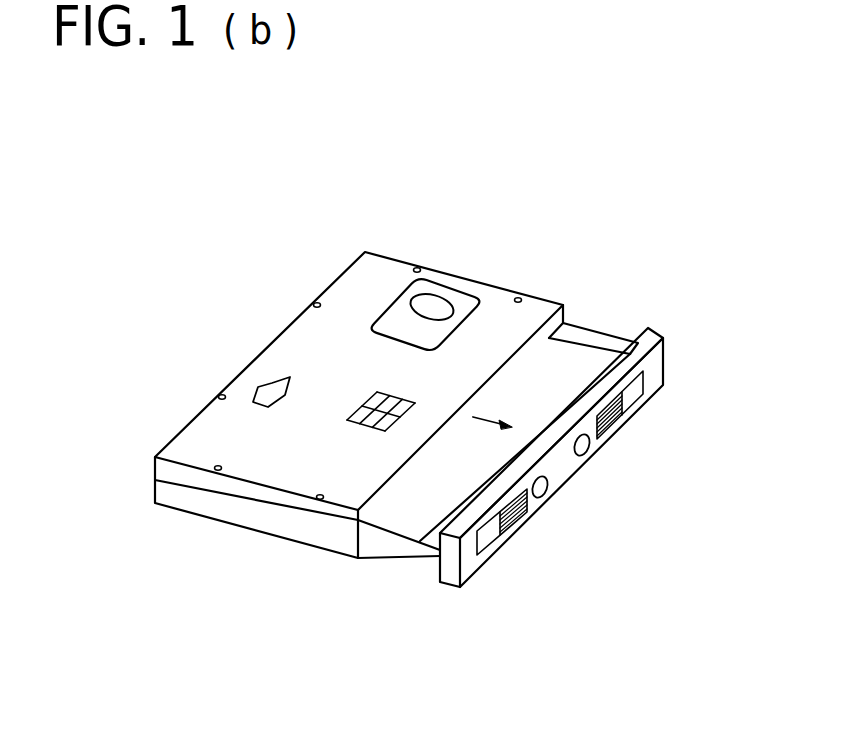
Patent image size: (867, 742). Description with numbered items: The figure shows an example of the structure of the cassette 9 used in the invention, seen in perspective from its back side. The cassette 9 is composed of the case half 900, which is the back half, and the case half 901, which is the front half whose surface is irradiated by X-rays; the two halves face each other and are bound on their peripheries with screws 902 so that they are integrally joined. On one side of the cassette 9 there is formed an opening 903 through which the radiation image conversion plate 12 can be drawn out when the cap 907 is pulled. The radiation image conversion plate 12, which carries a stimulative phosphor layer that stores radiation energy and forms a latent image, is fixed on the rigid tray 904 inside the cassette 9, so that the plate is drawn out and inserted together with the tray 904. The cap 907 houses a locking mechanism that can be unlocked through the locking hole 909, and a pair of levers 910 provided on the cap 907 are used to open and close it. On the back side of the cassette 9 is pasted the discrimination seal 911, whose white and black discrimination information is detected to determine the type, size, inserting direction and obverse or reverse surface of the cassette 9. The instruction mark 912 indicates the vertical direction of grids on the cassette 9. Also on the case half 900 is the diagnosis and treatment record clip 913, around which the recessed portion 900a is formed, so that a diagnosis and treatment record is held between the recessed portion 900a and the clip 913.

The cassette 9 is at (182, 206).
The radiation image conversion plate 12 is at (603, 333).
The case half 900 is at (330, 284).
The recessed portion 900a is at (390, 315).
The case half 901 is at (174, 498).
The screws 902 is at (417, 265).
The opening 903 is at (549, 340).
The tray 904 is at (386, 550).
The cap 907 is at (630, 360).
The locking hole 909 is at (580, 457).
The levers 910 is at (610, 427).
The discrimination seal 911 is at (348, 420).
The instruction mark 912 is at (257, 395).
The diagnosis and treatment record clip 913 is at (447, 299).